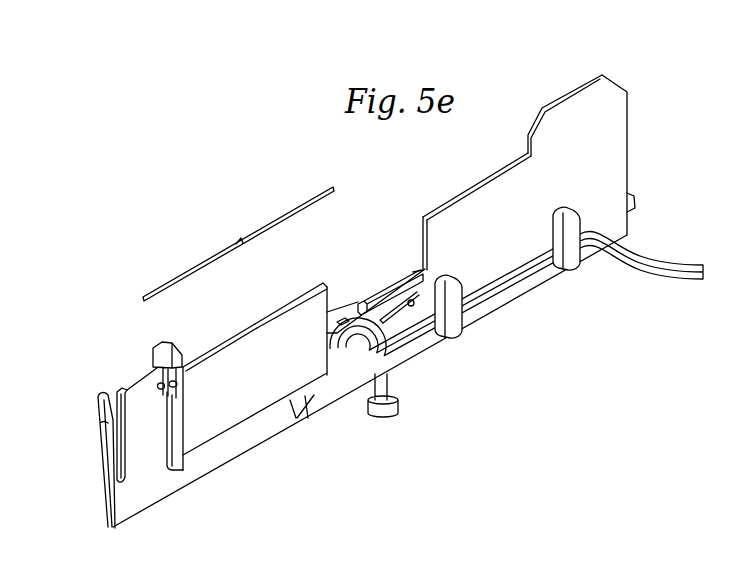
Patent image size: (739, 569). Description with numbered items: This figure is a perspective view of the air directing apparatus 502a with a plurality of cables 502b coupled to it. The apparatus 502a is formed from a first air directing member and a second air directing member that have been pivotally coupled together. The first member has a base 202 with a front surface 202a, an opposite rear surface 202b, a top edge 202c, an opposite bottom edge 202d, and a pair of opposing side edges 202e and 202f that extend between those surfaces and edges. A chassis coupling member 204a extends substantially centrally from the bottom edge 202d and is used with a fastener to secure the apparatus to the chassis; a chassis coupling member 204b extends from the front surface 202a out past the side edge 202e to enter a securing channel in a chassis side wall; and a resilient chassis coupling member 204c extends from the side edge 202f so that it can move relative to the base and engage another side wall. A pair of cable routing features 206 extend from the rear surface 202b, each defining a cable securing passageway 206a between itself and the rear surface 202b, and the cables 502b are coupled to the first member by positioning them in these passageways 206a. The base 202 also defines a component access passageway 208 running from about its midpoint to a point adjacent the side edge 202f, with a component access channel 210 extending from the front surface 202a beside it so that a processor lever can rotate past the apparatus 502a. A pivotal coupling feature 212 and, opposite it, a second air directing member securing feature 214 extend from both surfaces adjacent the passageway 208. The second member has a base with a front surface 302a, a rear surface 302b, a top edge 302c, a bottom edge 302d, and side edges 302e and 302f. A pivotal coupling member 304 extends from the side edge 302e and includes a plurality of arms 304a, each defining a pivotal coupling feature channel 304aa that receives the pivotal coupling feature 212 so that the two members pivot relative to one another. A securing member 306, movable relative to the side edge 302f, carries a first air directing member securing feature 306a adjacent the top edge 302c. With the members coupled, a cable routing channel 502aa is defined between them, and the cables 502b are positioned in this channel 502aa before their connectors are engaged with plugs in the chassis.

The base 202 is at (618, 80).
The front surface 202a is at (442, 204).
The rear surface 202b is at (137, 502).
The top edge 202c is at (482, 183).
The bottom edge 202d is at (512, 300).
The side edge 202e is at (630, 152).
The side edge 202f is at (118, 392).
The chassis coupling member 204a is at (396, 420).
The chassis coupling member 204b is at (636, 200).
The chassis coupling member 204c is at (97, 413).
The cable routing feature 206 is at (444, 283).
The cable securing passageway 206a is at (545, 231).
The component access passageway 208 is at (239, 242).
The component access channel 210 is at (316, 400).
The pivotal coupling feature 212 is at (412, 300).
The second air directing member securing feature 214 is at (160, 382).
The front surface 302a is at (241, 333).
The rear surface 302b is at (223, 423).
The top edge 302c is at (278, 310).
The bottom edge 302d is at (210, 446).
The side edge 302e is at (328, 287).
The side edge 302f is at (167, 395).
The pivotal coupling member 304 is at (326, 344).
The arm 304a is at (390, 300).
The pivotal coupling feature channel 304aa is at (413, 310).
The securing member 306 is at (148, 337).
The first air directing member securing feature 306a is at (183, 383).
The air directing apparatus 502a is at (289, 176).
The cable routing channel 502aa is at (362, 353).
The cable 502b is at (682, 273).